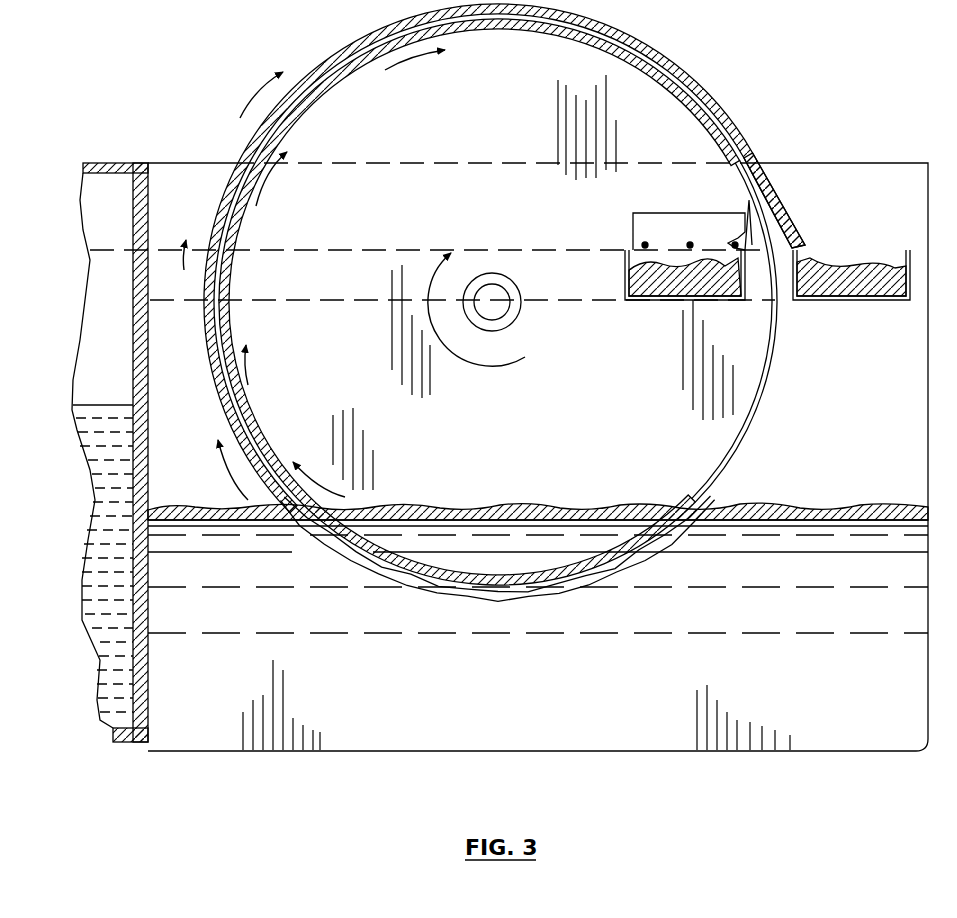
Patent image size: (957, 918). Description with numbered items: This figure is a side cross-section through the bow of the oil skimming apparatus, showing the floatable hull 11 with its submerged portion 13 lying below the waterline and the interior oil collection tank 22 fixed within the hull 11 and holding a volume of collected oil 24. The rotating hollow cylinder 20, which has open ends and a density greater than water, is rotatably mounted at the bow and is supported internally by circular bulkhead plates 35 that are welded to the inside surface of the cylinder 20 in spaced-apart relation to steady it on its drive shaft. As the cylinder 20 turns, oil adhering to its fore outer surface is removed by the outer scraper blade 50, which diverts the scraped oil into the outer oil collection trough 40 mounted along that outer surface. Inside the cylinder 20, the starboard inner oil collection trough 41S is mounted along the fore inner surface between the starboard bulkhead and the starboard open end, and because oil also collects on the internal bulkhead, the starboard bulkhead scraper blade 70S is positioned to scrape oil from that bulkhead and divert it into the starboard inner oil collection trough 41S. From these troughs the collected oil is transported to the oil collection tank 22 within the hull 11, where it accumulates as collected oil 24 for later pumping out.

The floatable hull 11 is at (136, 163).
The submerged portion 13 is at (380, 752).
The hollow cylinder 20 is at (698, 82).
The oil collection tank 22 is at (118, 262).
The collected oil 24 is at (105, 487).
The circular plates 35 is at (332, 183).
The outer oil collection trough 40 is at (838, 305).
The starboard inner oil collection trough 41S is at (655, 302).
The outer scraper blade 50 is at (790, 222).
The starboard bulkhead scraper blade 70S is at (640, 232).